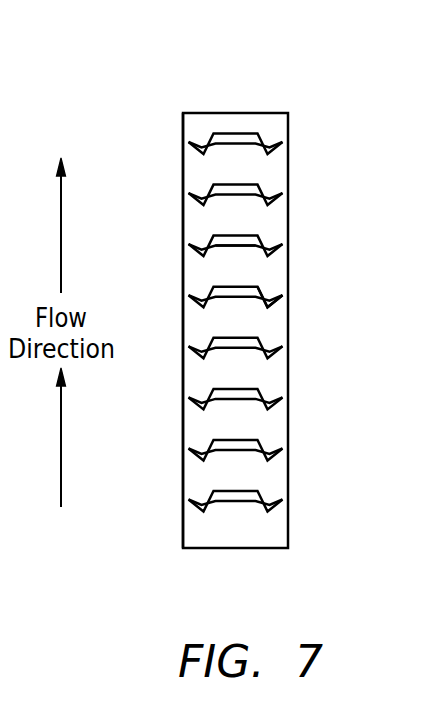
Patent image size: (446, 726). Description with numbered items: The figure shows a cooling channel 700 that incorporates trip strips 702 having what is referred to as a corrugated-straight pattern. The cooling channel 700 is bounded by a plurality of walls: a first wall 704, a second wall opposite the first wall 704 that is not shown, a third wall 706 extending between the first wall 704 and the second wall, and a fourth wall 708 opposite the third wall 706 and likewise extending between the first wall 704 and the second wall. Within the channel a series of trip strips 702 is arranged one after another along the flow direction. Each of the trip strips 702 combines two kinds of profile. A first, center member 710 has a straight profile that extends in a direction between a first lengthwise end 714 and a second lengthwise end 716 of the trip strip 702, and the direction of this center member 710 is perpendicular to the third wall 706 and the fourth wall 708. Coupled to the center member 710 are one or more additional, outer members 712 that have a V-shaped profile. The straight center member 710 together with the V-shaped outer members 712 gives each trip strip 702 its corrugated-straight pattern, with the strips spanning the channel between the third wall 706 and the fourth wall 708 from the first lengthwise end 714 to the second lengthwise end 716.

The cooling channel 700 is at (337, 90).
The trip strips 702 is at (279, 199).
The first wall 704 is at (240, 472).
The third wall 706 is at (183, 165).
The fourth wall 708 is at (288, 167).
The center member 710 is at (232, 247).
The outer members 712 is at (191, 248).
The first lengthwise end 714 is at (176, 300).
The second lengthwise end 716 is at (292, 305).